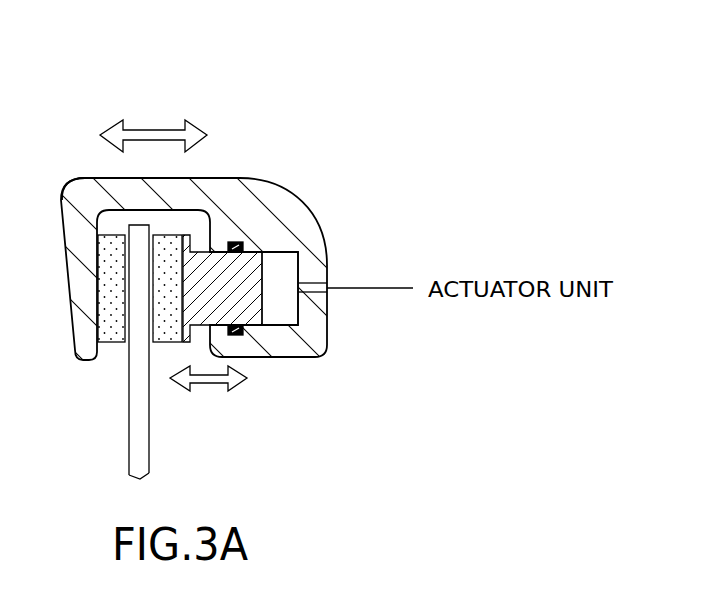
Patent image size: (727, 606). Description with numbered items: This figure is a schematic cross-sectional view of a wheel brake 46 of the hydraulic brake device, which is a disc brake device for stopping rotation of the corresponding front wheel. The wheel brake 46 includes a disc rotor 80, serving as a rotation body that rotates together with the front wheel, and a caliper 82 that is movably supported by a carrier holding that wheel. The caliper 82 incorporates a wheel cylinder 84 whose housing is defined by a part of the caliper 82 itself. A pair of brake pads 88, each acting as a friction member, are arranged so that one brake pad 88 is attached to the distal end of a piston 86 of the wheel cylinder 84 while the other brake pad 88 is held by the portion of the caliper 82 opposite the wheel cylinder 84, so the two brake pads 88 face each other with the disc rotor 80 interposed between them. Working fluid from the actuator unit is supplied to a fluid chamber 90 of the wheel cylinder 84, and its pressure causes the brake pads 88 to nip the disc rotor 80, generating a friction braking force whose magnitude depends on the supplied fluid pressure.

The wheel brake 46 is at (299, 63).
The disc rotor 80 is at (143, 450).
The caliper 82 is at (85, 185).
The wheel cylinder 84 is at (257, 233).
The piston 86 is at (213, 272).
The brake pad 88 is at (110, 340).
The fluid chamber 90 is at (283, 272).